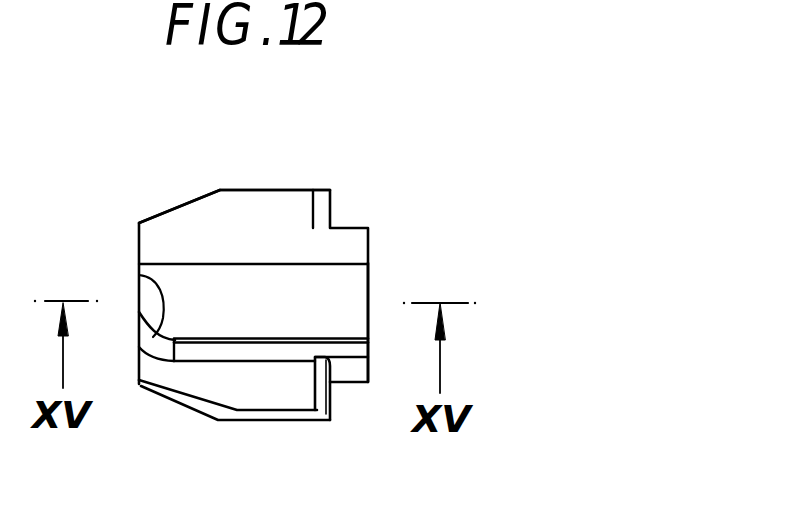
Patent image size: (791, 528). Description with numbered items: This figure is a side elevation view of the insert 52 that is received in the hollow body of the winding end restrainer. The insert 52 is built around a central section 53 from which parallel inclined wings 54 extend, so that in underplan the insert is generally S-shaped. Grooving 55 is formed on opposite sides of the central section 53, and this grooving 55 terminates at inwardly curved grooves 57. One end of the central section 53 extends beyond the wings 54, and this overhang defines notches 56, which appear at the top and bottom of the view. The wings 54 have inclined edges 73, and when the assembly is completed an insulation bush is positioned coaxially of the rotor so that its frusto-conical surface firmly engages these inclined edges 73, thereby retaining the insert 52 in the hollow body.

The insert 52 is at (183, 200).
The central section 53 is at (353, 287).
The inclined wings 54 is at (262, 205).
The grooving 55 is at (198, 350).
The notches 56 is at (332, 227).
The inwardly curved grooves 57 is at (139, 275).
The inclined edges 73 is at (162, 212).